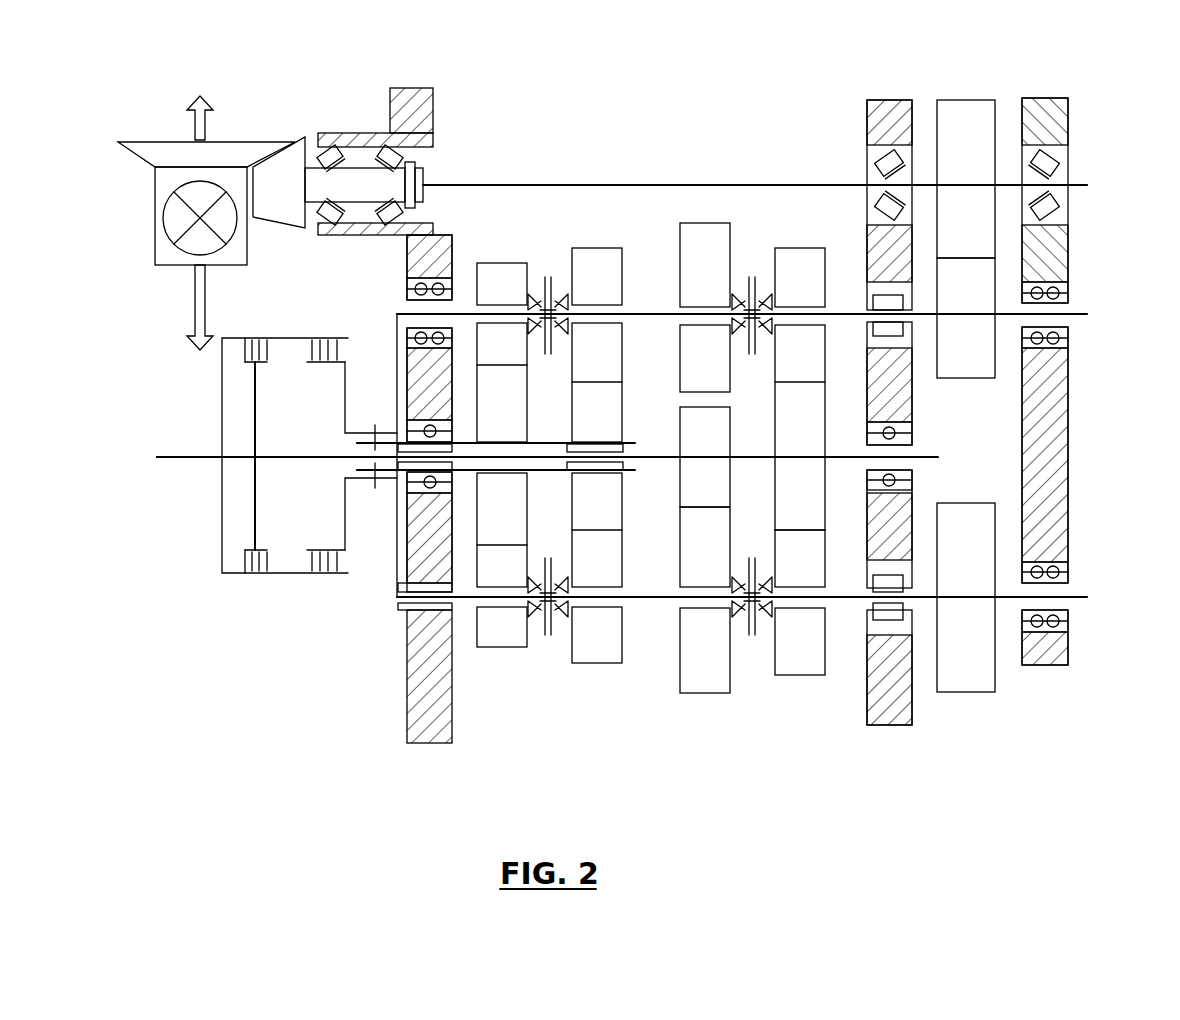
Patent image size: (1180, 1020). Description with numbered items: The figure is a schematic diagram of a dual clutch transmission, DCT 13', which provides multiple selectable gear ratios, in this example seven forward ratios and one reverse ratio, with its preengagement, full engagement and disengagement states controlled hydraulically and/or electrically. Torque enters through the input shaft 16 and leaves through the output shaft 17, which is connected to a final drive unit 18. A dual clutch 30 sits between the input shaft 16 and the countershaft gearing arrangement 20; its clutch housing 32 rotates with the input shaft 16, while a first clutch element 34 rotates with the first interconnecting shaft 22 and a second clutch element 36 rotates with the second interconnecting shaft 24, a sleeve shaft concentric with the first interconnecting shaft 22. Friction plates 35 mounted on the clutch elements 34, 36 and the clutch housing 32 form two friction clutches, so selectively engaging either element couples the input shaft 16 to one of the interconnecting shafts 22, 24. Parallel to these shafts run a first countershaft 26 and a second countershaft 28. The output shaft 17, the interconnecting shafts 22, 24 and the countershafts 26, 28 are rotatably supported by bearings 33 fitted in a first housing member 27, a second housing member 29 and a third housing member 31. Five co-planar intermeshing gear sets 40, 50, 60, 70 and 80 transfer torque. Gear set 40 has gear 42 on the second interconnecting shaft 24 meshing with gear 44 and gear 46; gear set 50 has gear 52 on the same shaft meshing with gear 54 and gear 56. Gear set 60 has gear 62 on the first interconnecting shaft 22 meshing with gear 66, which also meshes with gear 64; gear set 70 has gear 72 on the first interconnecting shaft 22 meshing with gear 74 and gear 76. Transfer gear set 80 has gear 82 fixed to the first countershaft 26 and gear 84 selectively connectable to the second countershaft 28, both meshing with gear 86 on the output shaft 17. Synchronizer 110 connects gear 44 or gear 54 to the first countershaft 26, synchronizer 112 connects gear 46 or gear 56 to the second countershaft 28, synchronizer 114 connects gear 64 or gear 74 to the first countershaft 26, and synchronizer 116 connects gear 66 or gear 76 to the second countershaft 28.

The DCT 13' is at (1097, 108).
The input shaft 16 is at (160, 458).
The output shaft 17 is at (538, 185).
The final drive unit 18 is at (236, 140).
The countershaft gearing arrangement 20 is at (323, 690).
The first interconnecting shaft 22 is at (652, 456).
The second interconnecting shaft 24 is at (548, 442).
The first countershaft 26 is at (648, 313).
The first housing member 27 is at (425, 745).
The second countershaft 28 is at (650, 600).
The second housing member 29 is at (888, 728).
The dual clutch 30 is at (283, 590).
The third housing member 31 is at (1045, 668).
The clutch housing 32 is at (282, 338).
The bearings 33 is at (412, 290).
The first clutch element 34 is at (255, 398).
The friction plates 35 is at (262, 552).
The second clutch element 36 is at (345, 375).
The gear set 40 is at (505, 666).
The gear 42 is at (513, 413).
The gear 44 is at (513, 292).
The gear 46 is at (513, 575).
The gear set 50 is at (600, 672).
The gear 52 is at (608, 415).
The gear 54 is at (608, 285).
The gear 56 is at (608, 557).
The gear set 60 is at (708, 700).
The gear 62 is at (716, 440).
The gear 64 is at (716, 268).
The gear 66 is at (716, 550).
The gear set 70 is at (802, 698).
The gear 72 is at (811, 420).
The gear 74 is at (811, 285).
The gear 76 is at (811, 565).
The transfer gear set 80 is at (972, 700).
The gear 82 is at (977, 295).
The gear 84 is at (977, 555).
The gear 86 is at (977, 150).
The synchronizer 110 is at (548, 260).
The synchronizer 112 is at (550, 640).
The synchronizer 114 is at (754, 260).
The synchronizer 116 is at (755, 646).